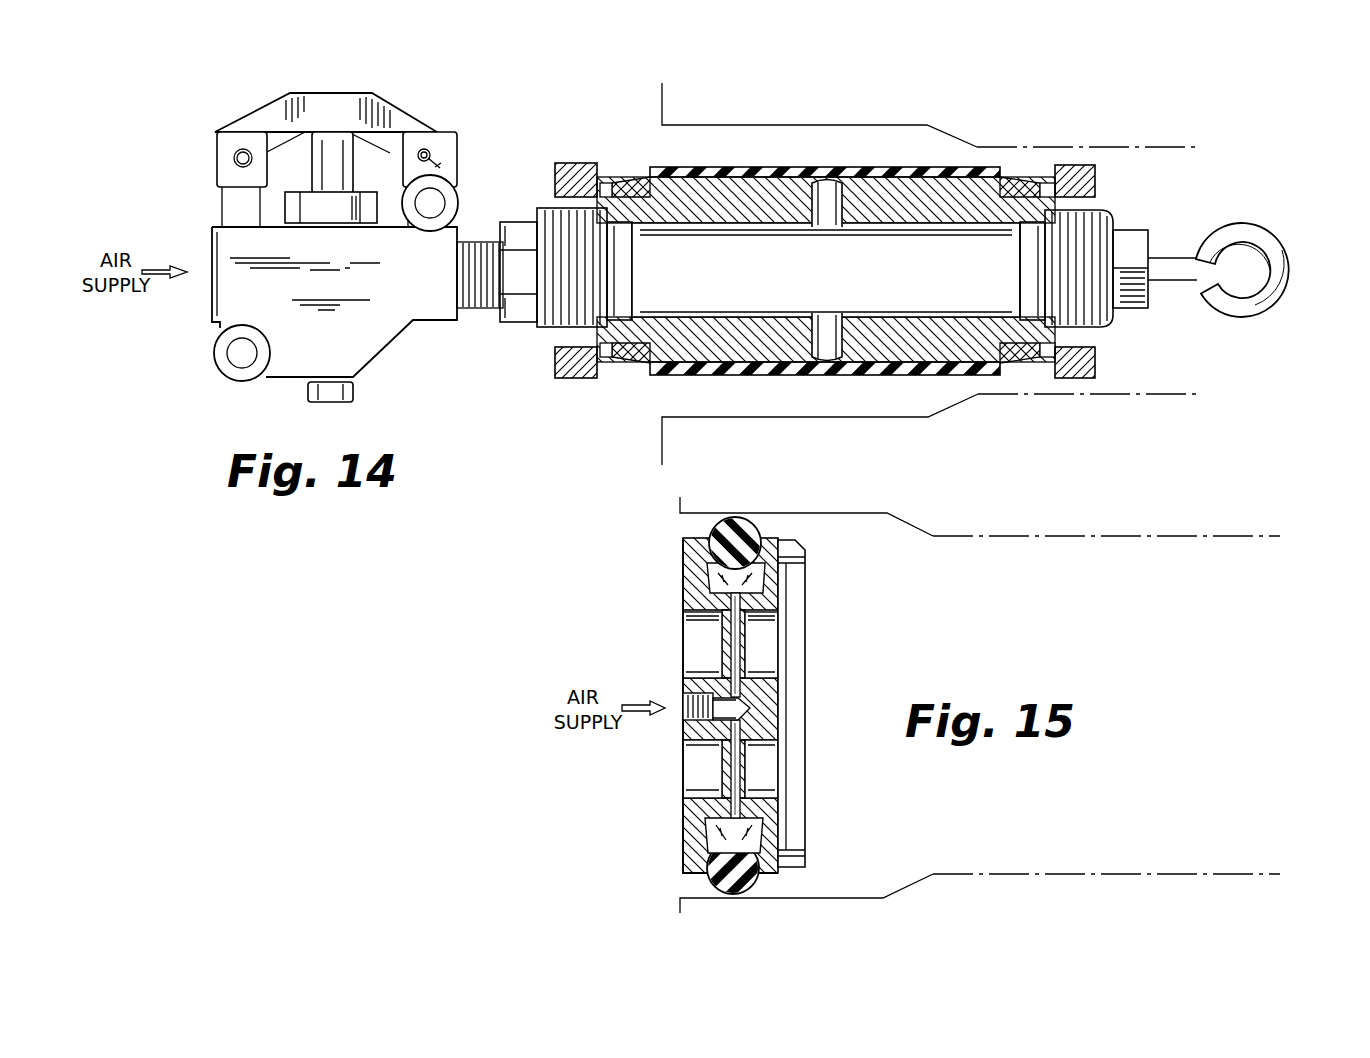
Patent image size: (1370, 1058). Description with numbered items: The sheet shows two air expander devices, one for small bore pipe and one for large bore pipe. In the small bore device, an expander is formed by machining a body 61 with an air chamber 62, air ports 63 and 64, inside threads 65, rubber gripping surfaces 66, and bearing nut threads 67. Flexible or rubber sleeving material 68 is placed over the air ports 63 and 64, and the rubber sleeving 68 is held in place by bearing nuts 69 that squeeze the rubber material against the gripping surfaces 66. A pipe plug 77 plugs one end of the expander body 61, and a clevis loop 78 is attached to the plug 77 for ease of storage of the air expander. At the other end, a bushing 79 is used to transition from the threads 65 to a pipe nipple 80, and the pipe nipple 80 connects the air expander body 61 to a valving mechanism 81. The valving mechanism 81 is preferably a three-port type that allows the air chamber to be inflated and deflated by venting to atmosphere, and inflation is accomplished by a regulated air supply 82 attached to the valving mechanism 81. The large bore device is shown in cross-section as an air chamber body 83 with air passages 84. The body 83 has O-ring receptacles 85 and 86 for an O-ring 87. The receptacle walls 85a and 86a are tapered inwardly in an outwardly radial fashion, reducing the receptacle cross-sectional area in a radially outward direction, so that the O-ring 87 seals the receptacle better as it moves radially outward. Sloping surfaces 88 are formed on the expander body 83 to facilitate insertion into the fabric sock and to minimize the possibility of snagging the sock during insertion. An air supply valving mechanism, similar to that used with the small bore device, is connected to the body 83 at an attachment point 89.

In FIG. 14, the body 61 is at (760, 187).
In FIG. 14, the air chamber 62 is at (812, 284).
In FIG. 14, the air port 63 is at (826, 185).
In FIG. 14, the air port 64 is at (822, 370).
In FIG. 14, the inside threads 65 is at (537, 332).
In FIG. 14, the rubber gripping surface 66 is at (657, 183).
In FIG. 14, the bearing nut threads 67 is at (1105, 210).
In FIG. 14, the rubber sleeving material 68 is at (870, 168).
In FIG. 14, the bearing nut 69 is at (566, 165).
In FIG. 14, the pipe plug 77 is at (1135, 240).
In FIG. 14, the clevis loop 78 is at (1262, 232).
In FIG. 14, the bushing 79 is at (515, 320).
In FIG. 14, the pipe nipple 80 is at (475, 300).
In FIG. 14, the valving mechanism 81 is at (393, 108).
In FIG. 14, the regulated air supply 82 is at (205, 288).
In FIG. 15, the air chamber body 83 is at (665, 640).
In FIG. 15, the air passage 84 is at (741, 655).
In FIG. 15, the O-ring receptacle 85 is at (760, 583).
In FIG. 15, the receptacle wall 85a is at (758, 578).
In FIG. 15, the O-ring receptacle 86 is at (757, 830).
In FIG. 15, the receptacle wall 86a is at (760, 848).
In FIG. 15, the O-ring 87 is at (713, 872).
In FIG. 15, the sloping surface 88 is at (762, 540).
In FIG. 15, the attachment point 89 is at (700, 718).